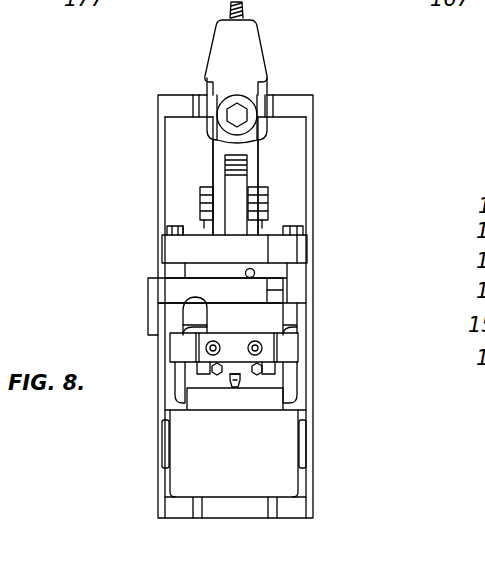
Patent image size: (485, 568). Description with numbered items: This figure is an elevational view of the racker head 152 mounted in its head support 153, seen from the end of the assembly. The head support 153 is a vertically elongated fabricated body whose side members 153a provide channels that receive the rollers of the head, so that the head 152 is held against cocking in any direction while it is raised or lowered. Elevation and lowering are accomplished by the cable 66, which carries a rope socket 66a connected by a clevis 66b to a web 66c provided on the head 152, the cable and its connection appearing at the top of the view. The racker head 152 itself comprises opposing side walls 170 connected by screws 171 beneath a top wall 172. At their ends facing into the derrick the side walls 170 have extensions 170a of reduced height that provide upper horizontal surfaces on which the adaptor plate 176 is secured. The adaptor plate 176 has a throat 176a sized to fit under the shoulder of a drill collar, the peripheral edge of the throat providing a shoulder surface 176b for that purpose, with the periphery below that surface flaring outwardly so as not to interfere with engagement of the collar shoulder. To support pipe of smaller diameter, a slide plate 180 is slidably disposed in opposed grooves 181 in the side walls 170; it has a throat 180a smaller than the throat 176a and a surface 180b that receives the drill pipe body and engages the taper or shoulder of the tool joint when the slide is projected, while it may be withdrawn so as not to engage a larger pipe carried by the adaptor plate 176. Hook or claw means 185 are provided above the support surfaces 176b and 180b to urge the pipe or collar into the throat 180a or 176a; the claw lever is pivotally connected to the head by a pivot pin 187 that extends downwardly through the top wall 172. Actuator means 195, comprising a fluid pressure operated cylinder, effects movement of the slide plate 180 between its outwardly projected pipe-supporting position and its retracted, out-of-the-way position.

The cable 66 is at (248, 14).
The rope socket 66a is at (252, 58).
The clevis 66b is at (258, 148).
The web 66c is at (240, 186).
The racker head 152 is at (170, 244).
The head support 153 is at (313, 508).
The side members 153a is at (313, 103).
The side walls 170 is at (172, 270).
The extensions 170a is at (170, 386).
The screws 171 is at (176, 222).
The top wall 172 is at (285, 221).
The adaptor plate 176 is at (300, 315).
The throat 176a is at (160, 309).
The shoulder surface 176b is at (300, 294).
The slide plate 180 is at (300, 344).
The throat 180a is at (167, 335).
The surface 180b is at (300, 339).
The grooves 181 is at (175, 363).
The hook or claw means 185 is at (148, 292).
The pivot pin 187 is at (195, 224).
The actuator means 195 is at (223, 375).